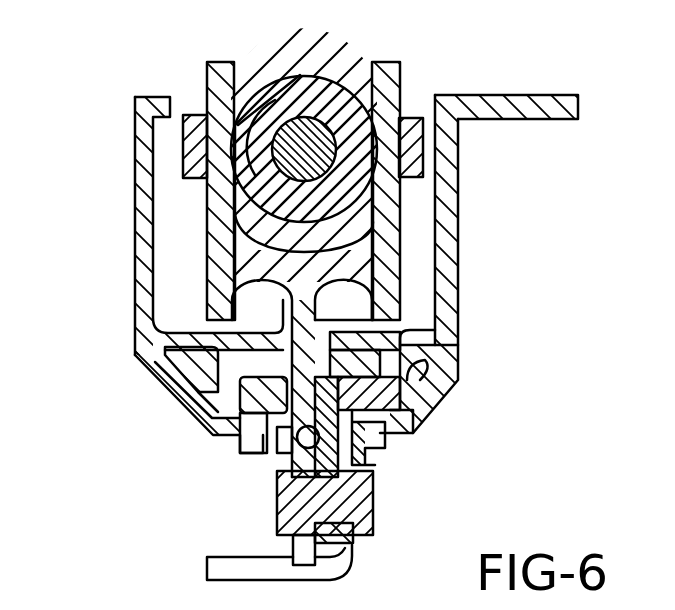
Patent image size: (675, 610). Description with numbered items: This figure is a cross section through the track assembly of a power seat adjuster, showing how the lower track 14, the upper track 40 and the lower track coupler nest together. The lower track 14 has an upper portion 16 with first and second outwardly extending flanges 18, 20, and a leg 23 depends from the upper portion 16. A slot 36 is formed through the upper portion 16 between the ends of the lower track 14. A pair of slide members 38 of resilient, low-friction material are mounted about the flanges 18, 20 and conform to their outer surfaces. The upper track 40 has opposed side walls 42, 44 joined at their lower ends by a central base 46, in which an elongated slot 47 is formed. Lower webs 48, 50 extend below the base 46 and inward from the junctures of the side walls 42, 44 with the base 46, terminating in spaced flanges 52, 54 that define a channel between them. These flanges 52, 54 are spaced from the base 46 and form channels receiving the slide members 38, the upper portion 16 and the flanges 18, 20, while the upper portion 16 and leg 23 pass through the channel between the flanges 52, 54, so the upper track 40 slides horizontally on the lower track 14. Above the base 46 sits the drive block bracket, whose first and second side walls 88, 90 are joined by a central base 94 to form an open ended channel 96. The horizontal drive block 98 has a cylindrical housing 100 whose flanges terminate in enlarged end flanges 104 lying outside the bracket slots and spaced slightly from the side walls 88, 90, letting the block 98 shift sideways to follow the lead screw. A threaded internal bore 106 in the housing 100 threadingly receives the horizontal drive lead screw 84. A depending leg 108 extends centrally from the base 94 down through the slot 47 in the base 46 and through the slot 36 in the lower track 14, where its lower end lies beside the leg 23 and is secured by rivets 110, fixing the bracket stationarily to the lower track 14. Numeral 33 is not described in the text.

The lower track 14 is at (283, 457).
The upper portion 16 is at (400, 418).
The first outwardly extending flange 18 is at (447, 382).
The second outwardly extending flange 20 is at (213, 420).
The leg 23 is at (335, 548).
The spacer 33 is at (380, 357).
The slot 36 is at (390, 460).
The slide members 38 is at (147, 367).
The upper track 40 is at (118, 270).
The side wall 42 is at (137, 217).
The side wall 44 is at (458, 192).
The central base 46 is at (400, 336).
The elongated slot 47 is at (233, 303).
The lower web 48 is at (167, 397).
The lower web 50 is at (455, 363).
The flange 52 is at (247, 457).
The flange 54 is at (390, 447).
The horizontal drive lead screw 84 is at (288, 128).
The first side wall 88 is at (395, 82).
The second side wall 90 is at (218, 200).
The central base 94 is at (388, 253).
The open ended channel 96 is at (237, 83).
The horizontal drive block 98 is at (393, 78).
The cylindrical housing 100 is at (345, 70).
The enlarged end flanges 104 is at (192, 115).
The threaded internal bore 106 is at (274, 110).
The depending leg 108 is at (322, 310).
The rivets 110 is at (267, 515).